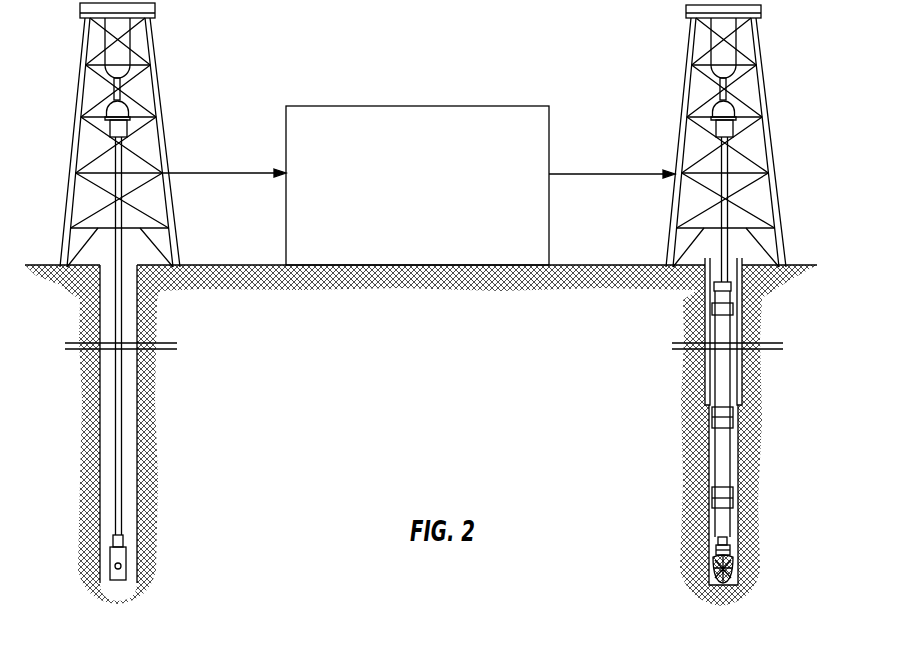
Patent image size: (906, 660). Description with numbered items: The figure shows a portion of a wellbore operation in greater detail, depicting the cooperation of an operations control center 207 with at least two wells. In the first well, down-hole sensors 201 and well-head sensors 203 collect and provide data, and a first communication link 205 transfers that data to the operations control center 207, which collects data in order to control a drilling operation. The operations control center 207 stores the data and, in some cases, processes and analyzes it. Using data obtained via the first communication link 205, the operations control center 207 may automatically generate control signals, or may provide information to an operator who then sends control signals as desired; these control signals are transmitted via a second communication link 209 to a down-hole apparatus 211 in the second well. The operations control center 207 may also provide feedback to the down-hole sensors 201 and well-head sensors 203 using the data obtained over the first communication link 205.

The down-hole sensors 201 is at (110, 555).
The well-head sensors 203 is at (117, 303).
The first communication link 205 is at (211, 172).
The operations control center 207 is at (338, 143).
The second communication link 209 is at (592, 173).
The down-hole apparatus 211 is at (715, 525).